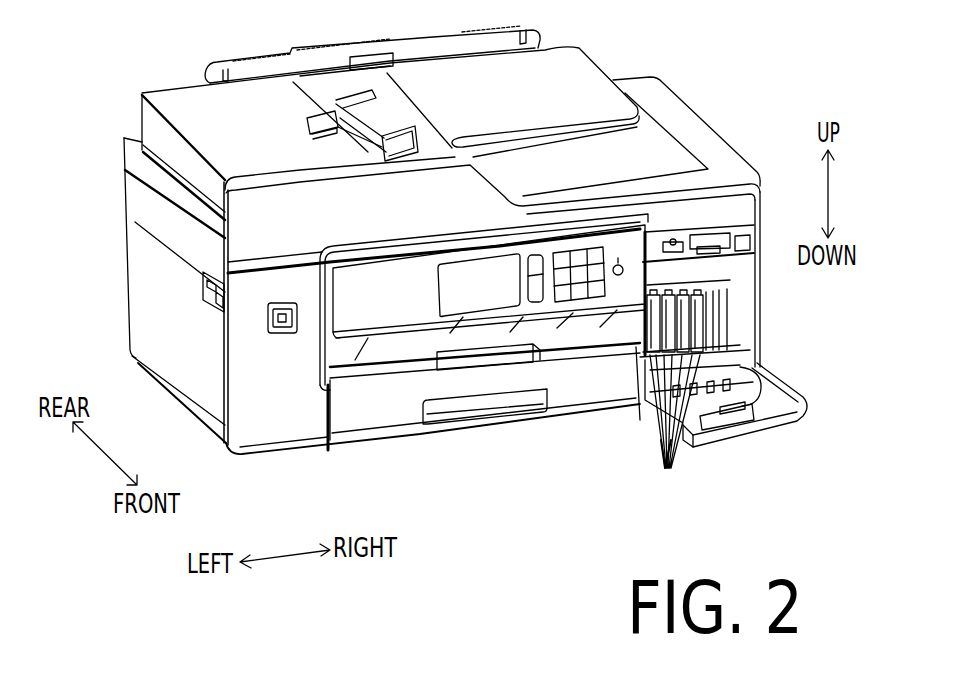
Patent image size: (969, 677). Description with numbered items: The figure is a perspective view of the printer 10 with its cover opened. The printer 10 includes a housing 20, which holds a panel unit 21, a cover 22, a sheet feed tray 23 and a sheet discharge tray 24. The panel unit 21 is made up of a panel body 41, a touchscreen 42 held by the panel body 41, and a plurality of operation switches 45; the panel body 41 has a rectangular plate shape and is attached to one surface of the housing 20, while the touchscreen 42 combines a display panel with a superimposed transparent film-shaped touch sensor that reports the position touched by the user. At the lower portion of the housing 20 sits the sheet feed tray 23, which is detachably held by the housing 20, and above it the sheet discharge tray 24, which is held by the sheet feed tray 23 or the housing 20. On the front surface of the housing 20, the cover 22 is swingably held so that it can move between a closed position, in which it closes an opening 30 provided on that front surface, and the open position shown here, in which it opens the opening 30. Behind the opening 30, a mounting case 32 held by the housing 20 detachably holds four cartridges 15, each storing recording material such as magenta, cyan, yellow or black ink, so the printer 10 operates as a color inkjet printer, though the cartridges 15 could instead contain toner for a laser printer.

The printer 10 is at (639, 50).
The cartridges 15 is at (675, 426).
The housing 20 is at (178, 347).
The panel unit 21 is at (540, 317).
The cover 22 is at (712, 437).
The sheet feed tray 23 is at (353, 408).
The sheet discharge tray 24 is at (383, 352).
The opening 30 is at (713, 316).
The mounting case 32 is at (733, 365).
The panel body 41 is at (425, 378).
The touchscreen 42 is at (480, 287).
The operation switches 45 is at (580, 282).